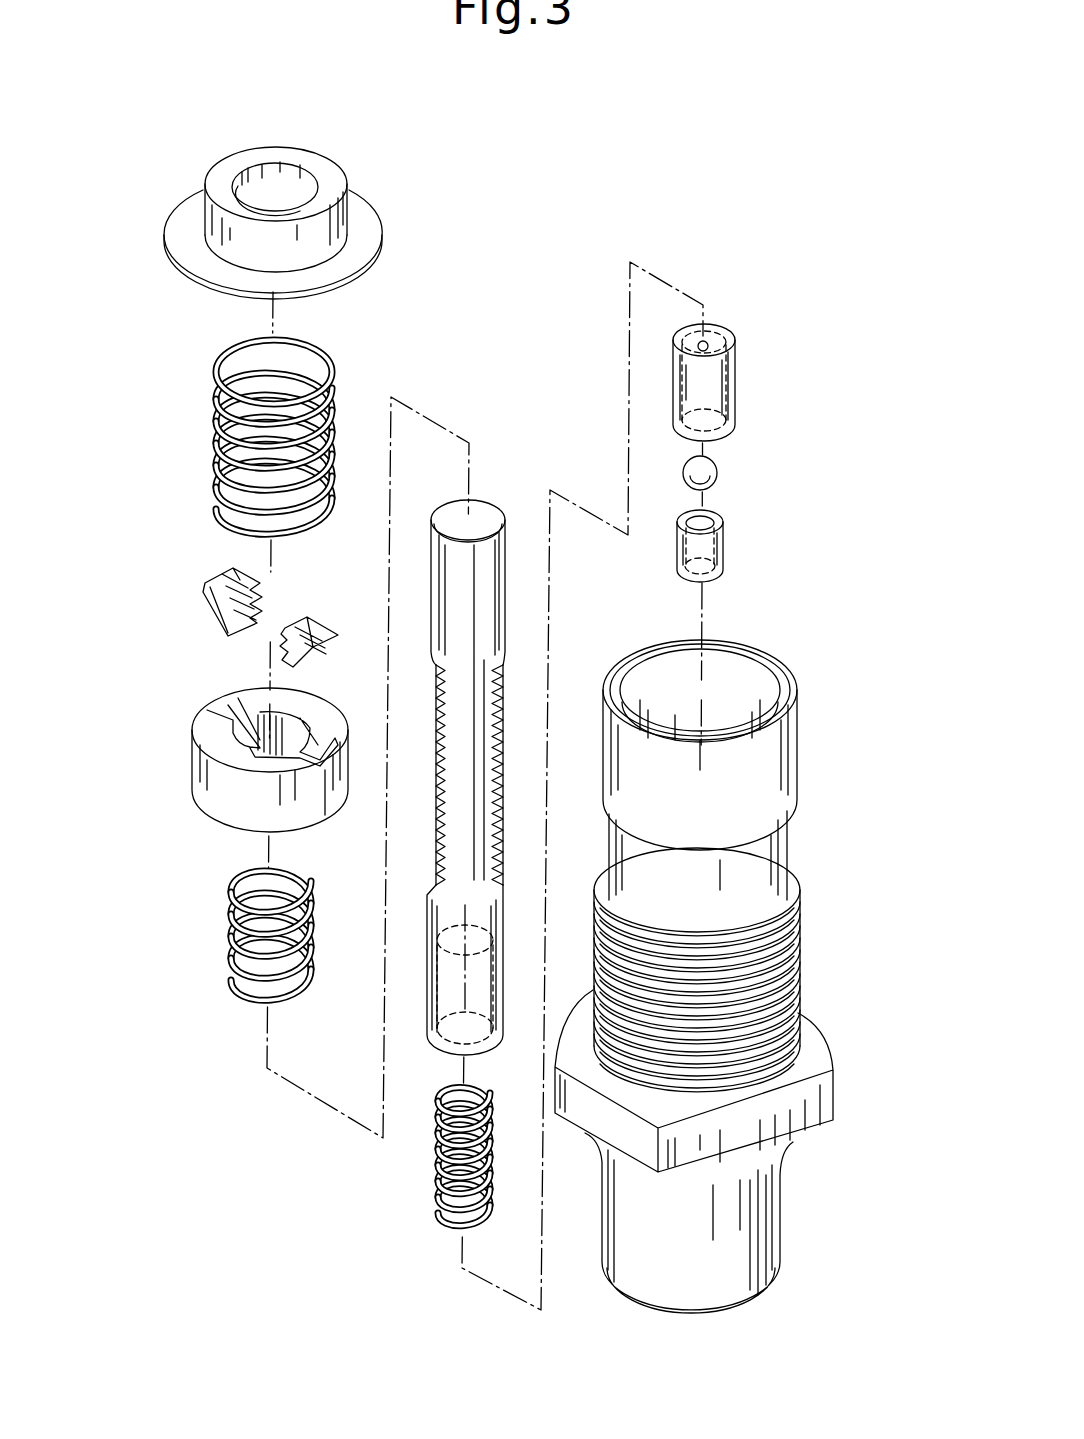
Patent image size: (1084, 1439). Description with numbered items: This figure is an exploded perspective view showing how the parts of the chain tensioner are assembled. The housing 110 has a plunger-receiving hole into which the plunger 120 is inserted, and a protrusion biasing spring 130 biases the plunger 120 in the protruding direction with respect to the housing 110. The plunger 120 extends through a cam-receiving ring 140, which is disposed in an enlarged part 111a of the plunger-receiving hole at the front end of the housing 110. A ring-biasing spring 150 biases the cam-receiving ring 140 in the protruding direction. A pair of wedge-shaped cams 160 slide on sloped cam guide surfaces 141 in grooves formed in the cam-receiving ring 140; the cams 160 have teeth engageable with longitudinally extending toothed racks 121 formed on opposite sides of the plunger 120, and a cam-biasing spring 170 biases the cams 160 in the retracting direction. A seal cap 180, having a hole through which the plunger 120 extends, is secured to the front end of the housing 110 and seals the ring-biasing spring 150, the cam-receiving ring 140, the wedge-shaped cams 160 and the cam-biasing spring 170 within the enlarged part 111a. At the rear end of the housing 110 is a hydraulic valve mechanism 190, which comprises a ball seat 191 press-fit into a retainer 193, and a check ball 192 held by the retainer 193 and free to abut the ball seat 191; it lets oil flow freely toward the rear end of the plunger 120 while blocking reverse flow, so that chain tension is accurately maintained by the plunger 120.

The housing 110 is at (725, 872).
The enlarged part of the plunger-receiving hole 111a is at (732, 676).
The plunger 120 is at (490, 510).
The racks 121 is at (433, 848).
The protrusion biasing spring 130 is at (437, 1205).
The cam-receiving ring 140 is at (238, 800).
The cam guide surfaces 141 is at (228, 708).
The ring-biasing spring 150 is at (232, 895).
The wedge-shaped cams 160 is at (223, 573).
The cam-biasing spring 170 is at (225, 365).
The seal cap 180 is at (220, 183).
The hydraulic valve mechanism 190 is at (808, 372).
The ball seat 191 is at (728, 550).
The check ball 192 is at (717, 467).
The retainer 193 is at (738, 392).